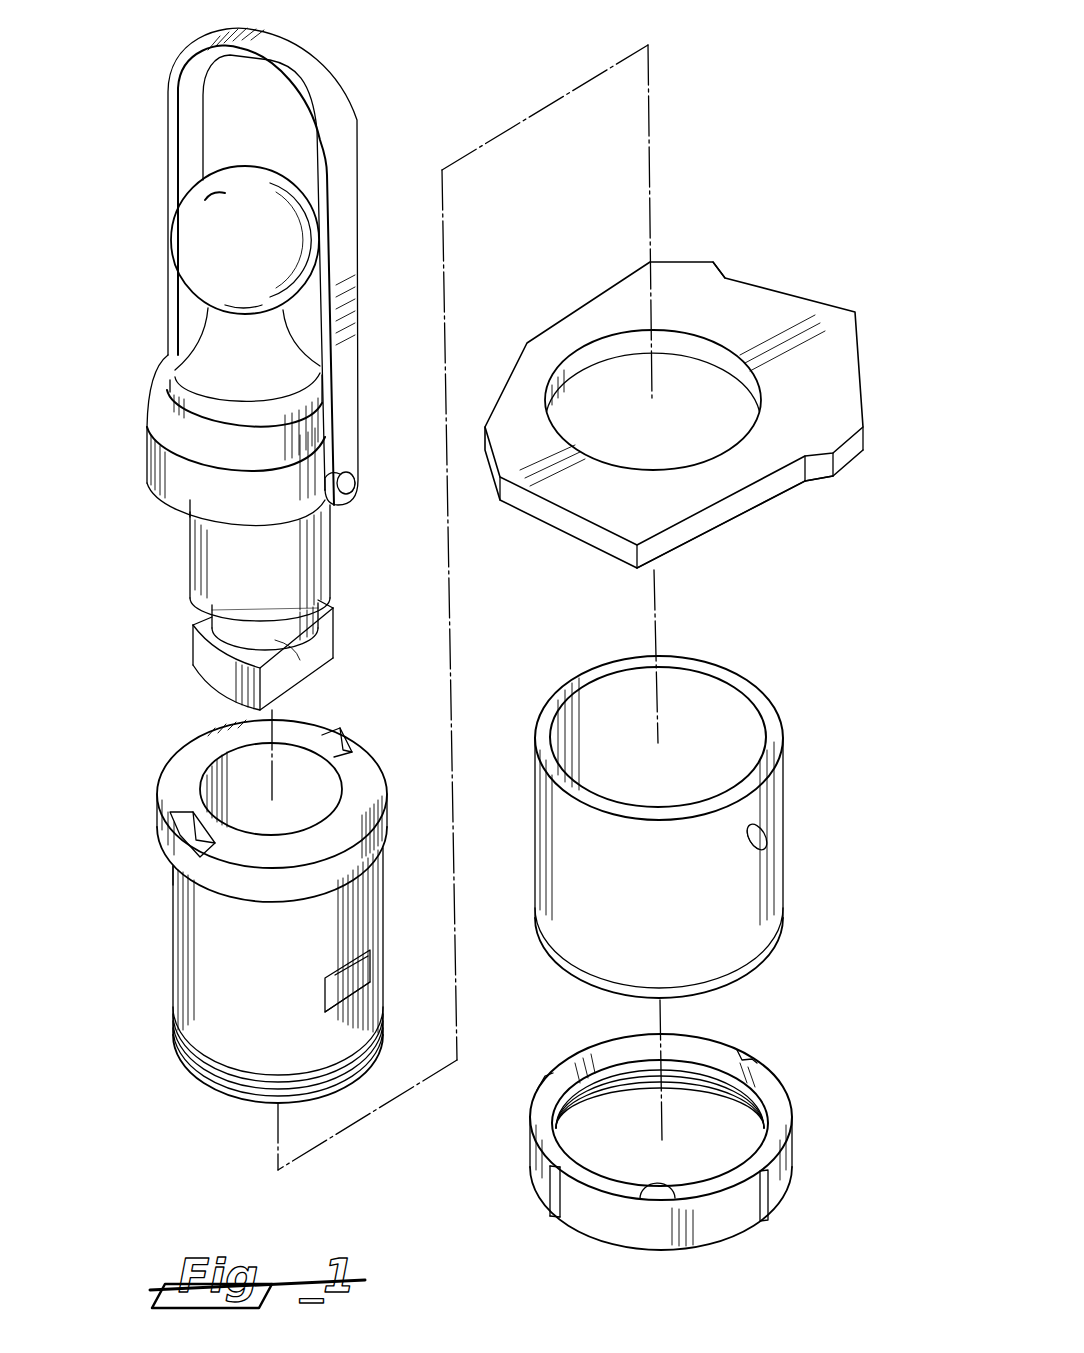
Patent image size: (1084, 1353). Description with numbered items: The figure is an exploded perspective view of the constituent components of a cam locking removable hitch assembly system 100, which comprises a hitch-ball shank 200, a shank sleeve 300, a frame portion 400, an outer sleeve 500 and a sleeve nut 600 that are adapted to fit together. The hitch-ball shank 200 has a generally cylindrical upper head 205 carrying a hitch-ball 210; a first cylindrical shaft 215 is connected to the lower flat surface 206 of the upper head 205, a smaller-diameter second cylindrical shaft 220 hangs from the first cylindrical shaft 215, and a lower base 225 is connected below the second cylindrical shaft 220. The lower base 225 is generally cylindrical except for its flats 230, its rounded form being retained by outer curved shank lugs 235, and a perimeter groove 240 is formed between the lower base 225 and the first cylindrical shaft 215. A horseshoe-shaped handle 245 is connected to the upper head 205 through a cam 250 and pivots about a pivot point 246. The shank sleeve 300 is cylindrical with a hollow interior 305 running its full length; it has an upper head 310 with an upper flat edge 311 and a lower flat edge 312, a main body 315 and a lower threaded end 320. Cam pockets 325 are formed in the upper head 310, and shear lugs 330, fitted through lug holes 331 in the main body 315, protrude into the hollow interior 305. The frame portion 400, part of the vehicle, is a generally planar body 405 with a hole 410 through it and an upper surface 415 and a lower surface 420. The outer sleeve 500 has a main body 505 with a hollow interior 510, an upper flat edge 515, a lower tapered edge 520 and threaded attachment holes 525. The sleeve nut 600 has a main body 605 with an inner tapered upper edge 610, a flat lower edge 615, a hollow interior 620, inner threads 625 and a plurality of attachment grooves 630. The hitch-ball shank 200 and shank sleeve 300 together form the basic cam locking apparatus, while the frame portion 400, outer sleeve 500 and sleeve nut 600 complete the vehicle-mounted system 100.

The cam locking removable hitch assembly system 100 is at (396, 66).
The hitch-ball shank 200 is at (378, 472).
The upper head 205 is at (150, 432).
The lower flat surface 206 is at (190, 505).
The hitch-ball 210 is at (200, 257).
The first cylindrical shaft 215 is at (318, 547).
The second cylindrical shaft 220 is at (298, 628).
The lower base 225 is at (315, 677).
The flats 230 is at (297, 676).
The outer curved shank lugs 235 is at (333, 645).
The perimeter groove 240 is at (203, 615).
The handle 245 is at (313, 73).
The pivot point 246 is at (352, 488).
The cam 250 is at (340, 472).
The shank sleeve 300 is at (153, 965).
The hollow interior 305 is at (296, 804).
The upper head 310 is at (387, 822).
The upper flat edge 311 is at (180, 780).
The lower flat edge 312 is at (192, 866).
The main body 315 is at (173, 1007).
The lower threaded end 320 is at (248, 1090).
The cam pockets 325 is at (345, 748).
The shear lugs 330 is at (368, 983).
The lug holes 331 is at (368, 988).
The frame portion 400 is at (549, 541).
The body 405 is at (805, 312).
The hole 410 is at (610, 380).
The upper surface 415 is at (748, 312).
The lower surface 420 is at (787, 495).
The outer sleeve 500 is at (525, 927).
The main body 505 is at (550, 827).
The hollow interior 510 is at (720, 700).
The upper flat edge 515 is at (597, 665).
The lower tapered edge 520 is at (735, 975).
The threaded attachment holes 525 is at (770, 830).
The sleeve nut 600 is at (805, 1068).
The main body 605 is at (793, 1152).
The inner tapered upper edge 610 is at (533, 1110).
The flat lower edge 615 is at (545, 1197).
The hollow interior 620 is at (620, 1110).
The inner threads 625 is at (640, 1200).
The attachment grooves 630 is at (556, 1200).